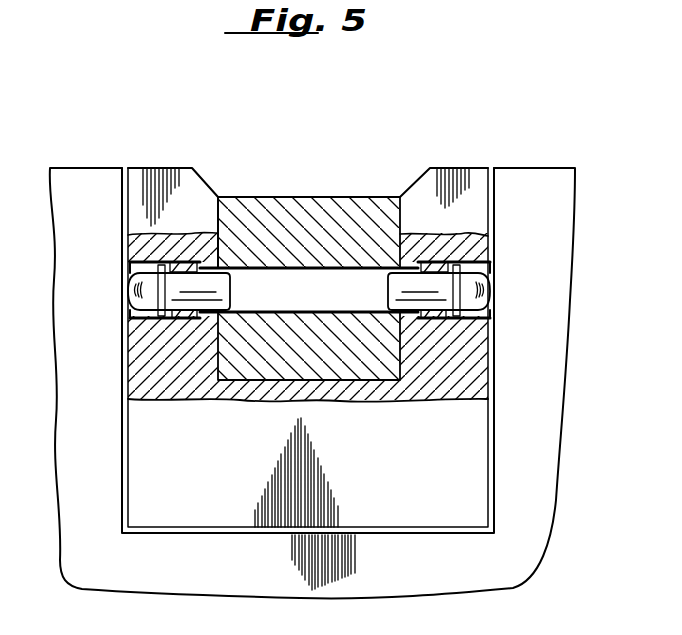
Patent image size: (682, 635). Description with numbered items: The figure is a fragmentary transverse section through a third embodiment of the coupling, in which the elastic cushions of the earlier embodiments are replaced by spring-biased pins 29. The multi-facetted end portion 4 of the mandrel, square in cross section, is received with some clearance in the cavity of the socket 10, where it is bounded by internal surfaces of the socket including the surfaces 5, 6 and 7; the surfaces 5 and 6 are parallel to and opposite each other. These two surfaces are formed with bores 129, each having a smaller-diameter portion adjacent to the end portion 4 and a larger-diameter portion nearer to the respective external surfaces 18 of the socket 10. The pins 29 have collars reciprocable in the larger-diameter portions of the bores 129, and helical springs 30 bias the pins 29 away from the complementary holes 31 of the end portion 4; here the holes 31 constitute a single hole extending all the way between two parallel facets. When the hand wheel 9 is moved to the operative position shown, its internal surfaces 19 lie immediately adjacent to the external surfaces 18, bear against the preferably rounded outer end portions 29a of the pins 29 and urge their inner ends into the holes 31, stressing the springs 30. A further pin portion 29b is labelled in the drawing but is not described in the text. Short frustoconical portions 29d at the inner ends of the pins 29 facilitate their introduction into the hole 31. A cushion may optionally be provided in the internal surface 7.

The multi-facetted end portion 4 is at (282, 208).
The internal surface 5 is at (402, 354).
The internal surface 6 is at (218, 215).
The internal surface 7 is at (304, 380).
The hand wheel 9 is at (70, 366).
The socket 10 is at (182, 517).
The external surfaces 18 is at (128, 440).
The internal surfaces 19 is at (128, 478).
The pins 29 is at (223, 273).
The rounded outer end portions 29a is at (132, 270).
The bracket 29b is at (462, 264).
The frustoconical portions 29d is at (233, 285).
The helical springs 30 is at (197, 328).
The holes 31 is at (243, 301).
The bores 129 is at (148, 268).